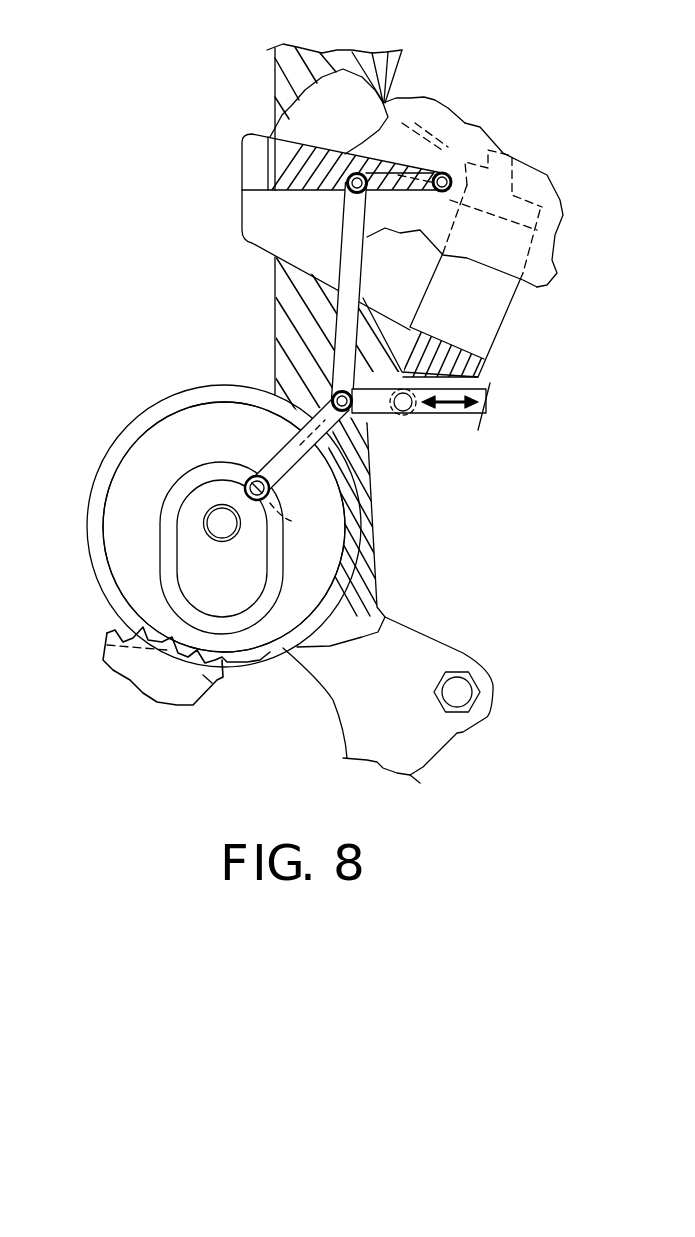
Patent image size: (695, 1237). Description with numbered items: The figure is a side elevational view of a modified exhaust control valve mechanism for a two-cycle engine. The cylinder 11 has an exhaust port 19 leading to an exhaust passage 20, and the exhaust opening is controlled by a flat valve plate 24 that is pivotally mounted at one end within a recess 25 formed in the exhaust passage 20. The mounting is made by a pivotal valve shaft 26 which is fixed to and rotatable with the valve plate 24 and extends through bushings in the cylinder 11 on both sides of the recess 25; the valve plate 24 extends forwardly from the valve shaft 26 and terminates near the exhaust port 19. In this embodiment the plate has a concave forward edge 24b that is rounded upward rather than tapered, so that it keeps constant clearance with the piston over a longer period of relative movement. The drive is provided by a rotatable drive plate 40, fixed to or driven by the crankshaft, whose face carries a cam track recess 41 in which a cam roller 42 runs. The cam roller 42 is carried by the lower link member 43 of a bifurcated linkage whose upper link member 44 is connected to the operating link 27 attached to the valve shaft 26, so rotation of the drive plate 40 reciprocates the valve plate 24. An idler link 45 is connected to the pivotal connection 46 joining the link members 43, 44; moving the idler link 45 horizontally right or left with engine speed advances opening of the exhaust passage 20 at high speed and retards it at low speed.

The cylinder 11 is at (288, 62).
The exhaust port 19 is at (244, 234).
The exhaust passage 20 is at (483, 320).
The valve plate 24 is at (417, 120).
The concave forward edge 24b is at (243, 148).
The recess 25 is at (332, 103).
The valve shaft 26 is at (448, 173).
The operating link 27 is at (447, 172).
The drive plate 40 is at (310, 555).
The cam track recess 41 is at (167, 557).
The cam roller 42 is at (286, 499).
The lower link member 43 is at (288, 447).
The upper link member 44 is at (352, 273).
The idler link 45 is at (380, 410).
The pivotal connection 46 is at (362, 413).